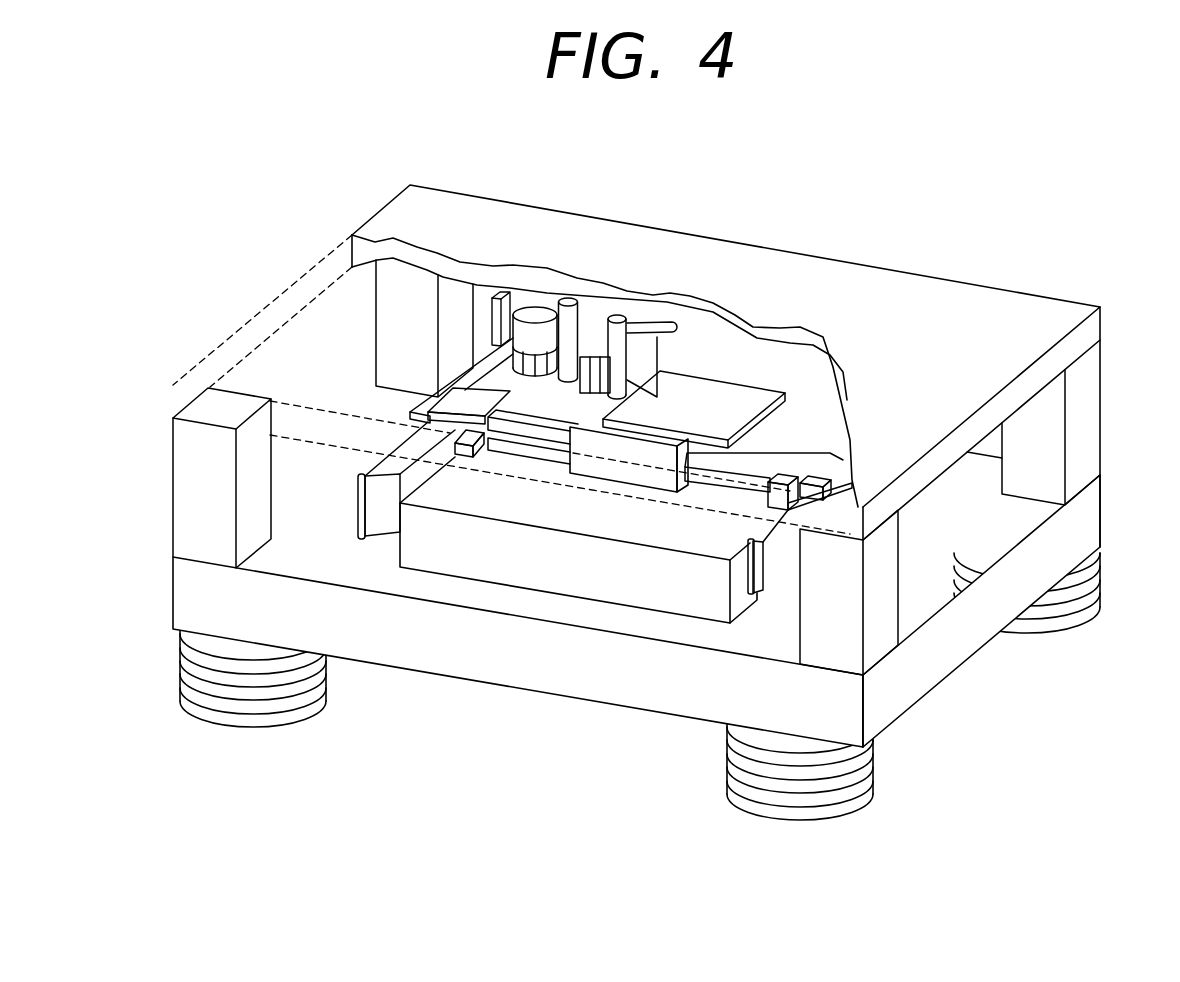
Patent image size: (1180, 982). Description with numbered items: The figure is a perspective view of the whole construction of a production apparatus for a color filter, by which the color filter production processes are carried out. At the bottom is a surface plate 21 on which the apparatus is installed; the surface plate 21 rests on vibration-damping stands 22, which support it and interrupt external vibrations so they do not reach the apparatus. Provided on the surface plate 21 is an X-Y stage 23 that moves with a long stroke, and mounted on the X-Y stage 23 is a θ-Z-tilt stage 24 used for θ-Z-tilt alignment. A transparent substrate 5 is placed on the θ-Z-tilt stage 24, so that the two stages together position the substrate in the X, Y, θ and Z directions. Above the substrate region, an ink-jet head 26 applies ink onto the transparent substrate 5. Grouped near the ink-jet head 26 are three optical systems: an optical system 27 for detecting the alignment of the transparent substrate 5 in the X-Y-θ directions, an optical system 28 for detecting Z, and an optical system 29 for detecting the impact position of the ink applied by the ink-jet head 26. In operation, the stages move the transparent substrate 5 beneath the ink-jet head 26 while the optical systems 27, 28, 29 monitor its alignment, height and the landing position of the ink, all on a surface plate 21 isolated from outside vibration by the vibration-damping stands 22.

The transparent substrate 5 is at (747, 397).
The surface plate 21 is at (545, 671).
The vibration-damping stands 22 is at (863, 788).
The X-Y stage 23 is at (472, 558).
The θ-Z-tilt stage 24 is at (648, 458).
The ink-jet head 26 is at (596, 361).
The optical system for detecting alignment 27 is at (539, 315).
The optical system for detecting Z 28 is at (563, 306).
The optical system for detecting impact position 29 is at (652, 357).